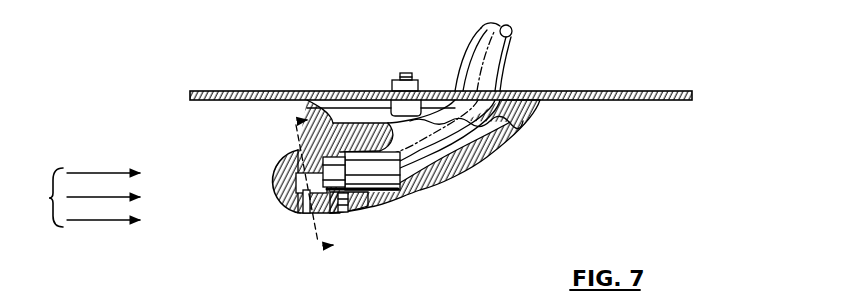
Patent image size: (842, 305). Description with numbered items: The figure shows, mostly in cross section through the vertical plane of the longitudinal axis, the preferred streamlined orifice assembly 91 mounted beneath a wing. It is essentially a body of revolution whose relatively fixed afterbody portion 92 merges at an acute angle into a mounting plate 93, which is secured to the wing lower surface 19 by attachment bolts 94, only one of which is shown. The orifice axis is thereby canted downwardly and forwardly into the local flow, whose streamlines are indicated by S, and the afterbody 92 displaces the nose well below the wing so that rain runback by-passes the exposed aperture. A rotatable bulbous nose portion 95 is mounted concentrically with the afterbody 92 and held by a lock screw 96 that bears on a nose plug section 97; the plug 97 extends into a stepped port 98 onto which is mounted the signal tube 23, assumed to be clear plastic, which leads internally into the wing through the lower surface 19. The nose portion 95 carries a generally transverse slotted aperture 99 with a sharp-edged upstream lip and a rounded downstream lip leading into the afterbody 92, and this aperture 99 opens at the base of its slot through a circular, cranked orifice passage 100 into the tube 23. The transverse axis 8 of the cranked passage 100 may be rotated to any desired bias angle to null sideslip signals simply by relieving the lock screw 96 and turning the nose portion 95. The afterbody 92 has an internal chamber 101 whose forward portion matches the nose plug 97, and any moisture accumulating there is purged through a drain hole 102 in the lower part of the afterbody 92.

The wing lower surface 19 is at (660, 101).
The signal tube 23 is at (514, 34).
The orifice assembly 91 is at (480, 170).
The afterbody portion 92 is at (505, 150).
The mounting plate 93 is at (538, 110).
The attachment bolts 94 is at (407, 73).
The bulbous nose portion 95 is at (278, 176).
The lock screw 96 is at (343, 212).
The nose plug section 97 is at (295, 152).
The stepped port 98 is at (400, 192).
The slotted aperture 99 is at (308, 218).
The cranked orifice passage 100 is at (296, 214).
The internal chamber 101 is at (388, 133).
The drain hole 102 is at (364, 205).
The transverse axis 8 is at (307, 188).
The local flow streamlines S is at (86, 197).